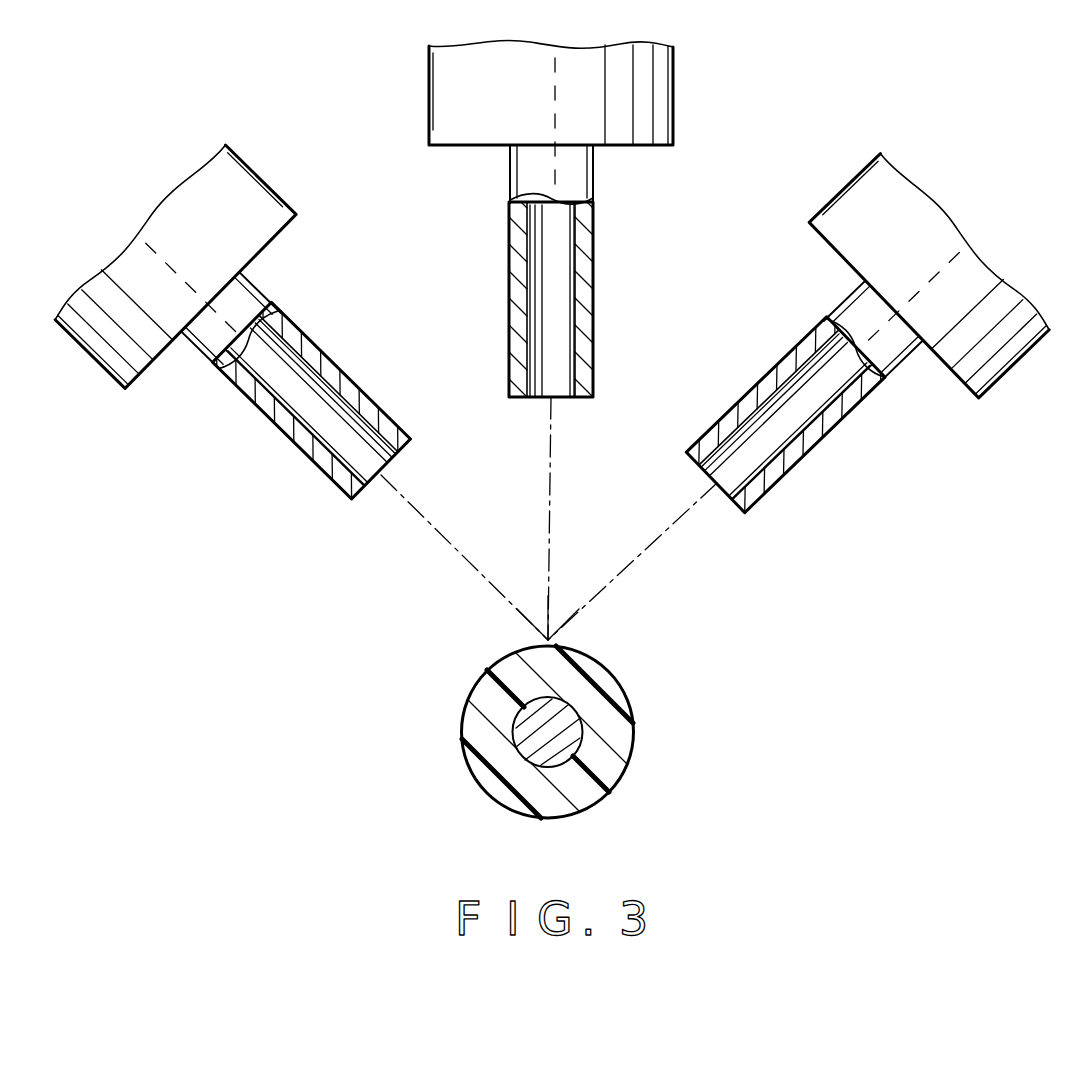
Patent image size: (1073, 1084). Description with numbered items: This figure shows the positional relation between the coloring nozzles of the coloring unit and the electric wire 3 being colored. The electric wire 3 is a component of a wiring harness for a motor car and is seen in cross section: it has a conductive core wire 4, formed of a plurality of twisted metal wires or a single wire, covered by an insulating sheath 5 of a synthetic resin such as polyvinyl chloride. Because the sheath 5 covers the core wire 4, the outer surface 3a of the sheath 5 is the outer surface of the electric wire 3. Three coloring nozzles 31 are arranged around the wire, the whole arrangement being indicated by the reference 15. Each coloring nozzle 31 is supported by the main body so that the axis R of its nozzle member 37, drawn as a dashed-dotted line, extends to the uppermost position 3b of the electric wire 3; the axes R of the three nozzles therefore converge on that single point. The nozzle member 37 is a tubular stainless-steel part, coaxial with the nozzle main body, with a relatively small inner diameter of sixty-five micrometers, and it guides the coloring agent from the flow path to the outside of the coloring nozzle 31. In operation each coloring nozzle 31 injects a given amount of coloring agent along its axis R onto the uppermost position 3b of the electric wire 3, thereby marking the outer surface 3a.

The guide assembly 15 is at (552, 276).
The coloring nozzle 31 is at (598, 223).
The nozzle member 37 is at (594, 280).
The electric wire 3 is at (595, 709).
The outer surface 3a is at (628, 756).
The uppermost position 3b is at (548, 638).
The core wire 4 is at (538, 748).
The sheath 5 is at (570, 790).
The axis R is at (450, 542).